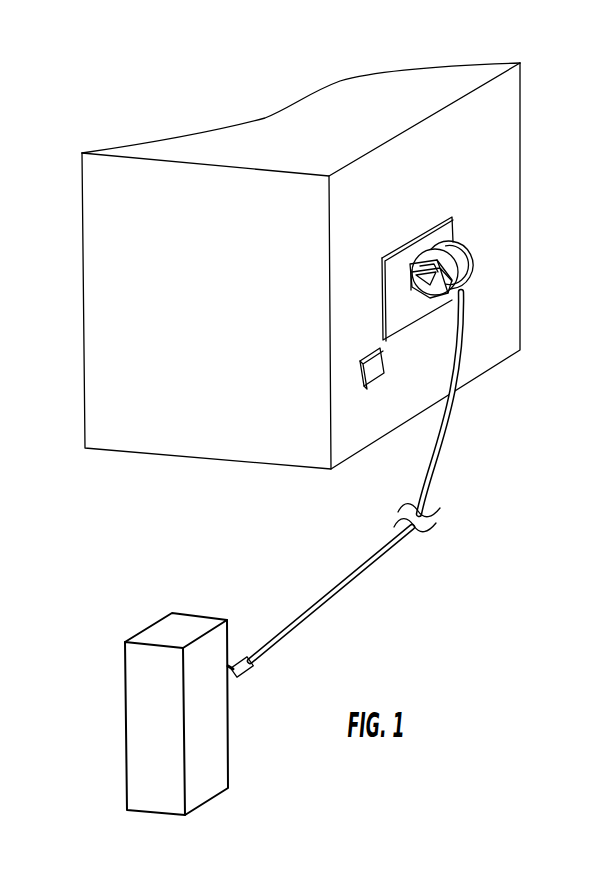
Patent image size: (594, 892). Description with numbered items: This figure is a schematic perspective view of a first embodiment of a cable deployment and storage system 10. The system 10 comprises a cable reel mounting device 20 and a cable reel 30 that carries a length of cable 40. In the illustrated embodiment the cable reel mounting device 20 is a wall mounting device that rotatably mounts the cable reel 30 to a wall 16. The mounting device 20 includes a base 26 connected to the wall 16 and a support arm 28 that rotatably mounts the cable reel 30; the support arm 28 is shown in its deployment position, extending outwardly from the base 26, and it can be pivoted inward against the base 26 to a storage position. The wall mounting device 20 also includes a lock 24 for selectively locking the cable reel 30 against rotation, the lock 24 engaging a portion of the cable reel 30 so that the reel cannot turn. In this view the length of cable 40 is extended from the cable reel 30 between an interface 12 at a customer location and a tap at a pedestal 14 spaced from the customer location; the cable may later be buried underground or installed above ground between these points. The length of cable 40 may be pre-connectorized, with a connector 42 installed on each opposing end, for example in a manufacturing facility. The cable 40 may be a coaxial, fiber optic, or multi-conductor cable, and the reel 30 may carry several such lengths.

The cable deployment and storage system 10 is at (237, 505).
The interface 12 is at (375, 382).
The pedestal 14 is at (125, 722).
The wall 16 is at (484, 126).
The cable reel mounting device 20 is at (455, 216).
The lock 24 is at (428, 292).
The base 26 is at (408, 287).
The support arm 28 is at (412, 287).
The cable reel 30 is at (476, 279).
The length of cable 40 is at (430, 494).
The connector 42 is at (242, 656).